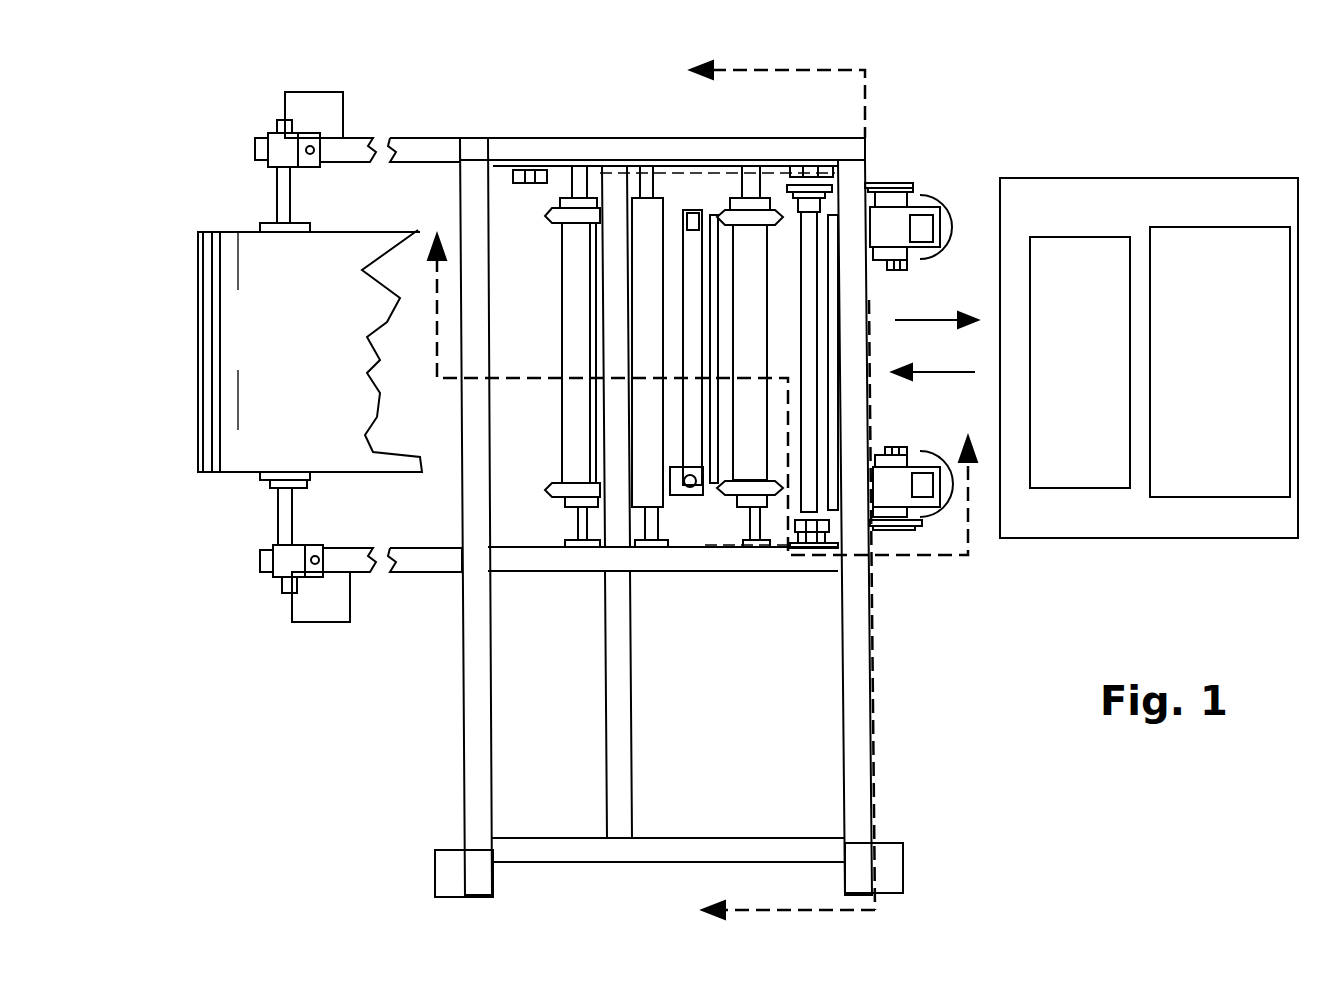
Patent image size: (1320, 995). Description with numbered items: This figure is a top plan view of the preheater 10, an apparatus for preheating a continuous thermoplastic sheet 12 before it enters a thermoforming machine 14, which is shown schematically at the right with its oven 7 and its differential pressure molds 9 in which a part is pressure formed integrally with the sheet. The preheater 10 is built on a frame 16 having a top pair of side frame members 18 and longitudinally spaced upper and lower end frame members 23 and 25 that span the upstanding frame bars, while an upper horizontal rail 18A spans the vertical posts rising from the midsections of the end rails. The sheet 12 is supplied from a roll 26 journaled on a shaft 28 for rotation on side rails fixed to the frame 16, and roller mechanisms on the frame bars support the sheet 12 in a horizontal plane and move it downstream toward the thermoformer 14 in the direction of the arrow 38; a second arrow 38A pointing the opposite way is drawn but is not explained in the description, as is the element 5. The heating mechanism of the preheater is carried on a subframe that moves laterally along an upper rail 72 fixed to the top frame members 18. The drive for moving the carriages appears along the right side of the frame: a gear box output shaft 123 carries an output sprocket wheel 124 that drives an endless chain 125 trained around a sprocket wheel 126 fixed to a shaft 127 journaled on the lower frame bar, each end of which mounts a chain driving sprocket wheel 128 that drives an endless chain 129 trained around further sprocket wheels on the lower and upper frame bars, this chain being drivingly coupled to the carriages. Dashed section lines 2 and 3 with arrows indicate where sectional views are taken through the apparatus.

The apparatus 5 is at (805, 757).
The oven 7 is at (1048, 488).
The differential pressure molds 9 is at (1172, 497).
The preheater 10 is at (918, 137).
The thermoplastic sheet 12 is at (331, 231).
The thermoforming machine 14 is at (1112, 178).
The frame 16 is at (410, 116).
The top side frame members 18 is at (553, 138).
The upper horizontal rail 18A is at (663, 578).
The upper end frame members 23 is at (852, 306).
The lower end frame members 25 is at (475, 318).
The roll 26 is at (258, 616).
The shaft 28 is at (286, 190).
The arrow 38 is at (940, 320).
The film return path 38A is at (972, 376).
The upper laterally extending rail 72 is at (615, 723).
The output shaft 123 is at (905, 203).
The output sprocket wheel 124 is at (900, 188).
The endless chain 125 is at (867, 185).
The sprocket wheel 126 is at (805, 163).
The shaft 127 is at (787, 165).
The chain driving sprocket wheel 128 is at (818, 560).
The endless chain 129 is at (713, 545).
The section line 2- 2 is at (703, 370).
The section line 3- 3 is at (766, 495).